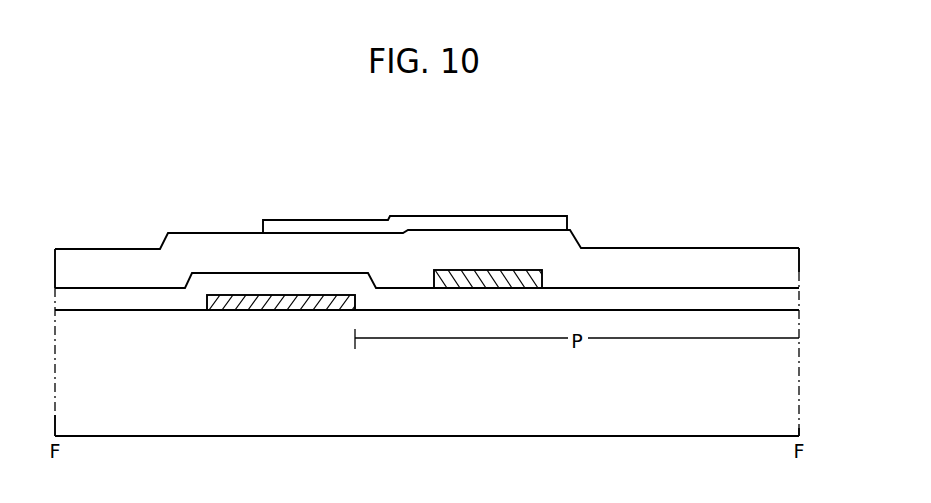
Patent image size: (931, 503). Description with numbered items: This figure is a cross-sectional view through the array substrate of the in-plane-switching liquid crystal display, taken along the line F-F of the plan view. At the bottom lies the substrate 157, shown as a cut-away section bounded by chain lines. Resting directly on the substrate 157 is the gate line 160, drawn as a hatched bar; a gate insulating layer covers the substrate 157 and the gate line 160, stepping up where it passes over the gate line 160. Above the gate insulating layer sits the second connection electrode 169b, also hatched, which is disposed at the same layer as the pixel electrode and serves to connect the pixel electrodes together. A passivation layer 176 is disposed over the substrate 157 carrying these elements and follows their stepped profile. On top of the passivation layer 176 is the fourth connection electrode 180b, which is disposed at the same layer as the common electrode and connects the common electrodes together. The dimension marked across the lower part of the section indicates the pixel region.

The substrate 157 is at (723, 388).
The gate line 160 is at (226, 297).
The second connection electrode 169b is at (502, 272).
The passivation layer 176 is at (672, 265).
The fourth connection electrode 180b is at (430, 225).